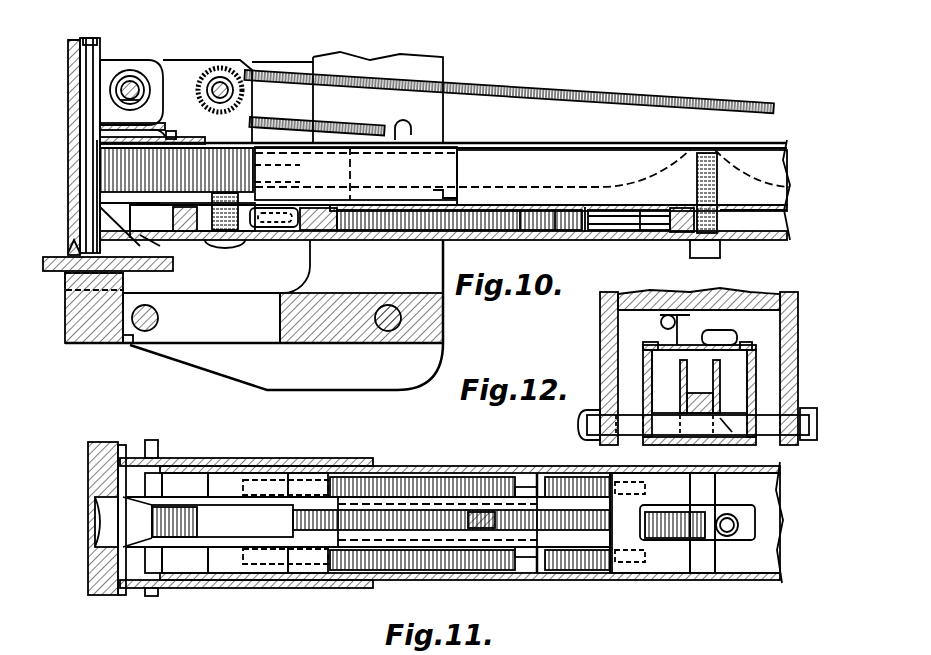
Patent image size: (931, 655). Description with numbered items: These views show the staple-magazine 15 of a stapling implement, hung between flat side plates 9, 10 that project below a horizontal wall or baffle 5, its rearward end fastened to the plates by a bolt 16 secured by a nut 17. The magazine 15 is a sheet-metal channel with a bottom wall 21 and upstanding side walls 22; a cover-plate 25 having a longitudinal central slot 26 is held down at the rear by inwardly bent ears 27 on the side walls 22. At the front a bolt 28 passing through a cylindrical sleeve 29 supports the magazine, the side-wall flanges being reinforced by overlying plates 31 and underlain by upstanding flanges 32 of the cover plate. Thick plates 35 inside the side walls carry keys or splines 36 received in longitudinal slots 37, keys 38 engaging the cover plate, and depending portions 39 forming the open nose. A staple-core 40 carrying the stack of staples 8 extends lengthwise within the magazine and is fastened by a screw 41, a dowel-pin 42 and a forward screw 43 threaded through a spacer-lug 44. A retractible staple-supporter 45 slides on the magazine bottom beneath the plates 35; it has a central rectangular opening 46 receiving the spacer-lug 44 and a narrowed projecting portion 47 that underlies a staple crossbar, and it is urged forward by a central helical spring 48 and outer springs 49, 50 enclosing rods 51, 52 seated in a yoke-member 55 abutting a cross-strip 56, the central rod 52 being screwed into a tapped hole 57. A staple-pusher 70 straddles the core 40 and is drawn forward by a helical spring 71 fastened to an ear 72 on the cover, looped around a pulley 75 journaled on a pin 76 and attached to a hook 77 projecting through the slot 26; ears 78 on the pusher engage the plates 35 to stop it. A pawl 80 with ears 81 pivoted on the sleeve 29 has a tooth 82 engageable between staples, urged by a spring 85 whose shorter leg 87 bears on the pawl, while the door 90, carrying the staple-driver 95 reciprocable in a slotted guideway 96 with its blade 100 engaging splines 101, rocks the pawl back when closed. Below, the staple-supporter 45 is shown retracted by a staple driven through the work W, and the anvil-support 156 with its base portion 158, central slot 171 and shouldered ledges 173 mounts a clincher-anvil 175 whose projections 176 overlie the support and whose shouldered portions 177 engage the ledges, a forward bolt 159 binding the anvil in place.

In FIG. 12, the horizontal wall 5 is at (752, 292).
In FIG. 10, the casing 8 is at (100, 178).
In FIG. 12, the side plate 9 is at (600, 301).
In FIG. 12, the side plate 10 is at (800, 345).
In FIG. 10, the staple-magazine 15 is at (649, 250).
In FIG. 12, the staple-magazine 15 is at (639, 360).
In FIG. 11, the staple-magazine 15 is at (495, 459).
In FIG. 12, the bolt 16 is at (634, 438).
In FIG. 12, the nut 17 is at (812, 440).
In FIG. 10, the bottom wall 21 is at (555, 238).
In FIG. 12, the bottom wall 21 is at (688, 446).
In FIG. 11, the bottom wall 21 is at (765, 492).
In FIG. 10, the side walls 22 is at (782, 218).
In FIG. 12, the side walls 22 is at (645, 362).
In FIG. 11, the side walls 22 is at (525, 486).
In FIG. 10, the cover-plate 25 is at (536, 148).
In FIG. 12, the cover-plate 25 is at (665, 354).
In FIG. 10, the central slot 26 is at (162, 132).
In FIG. 12, the central slot 26 is at (710, 331).
In FIG. 12, the ears 27 is at (652, 340).
In FIG. 10, the bolt 28 is at (128, 70).
In FIG. 10, the cylindrical sleeve 29 is at (142, 68).
In FIG. 10, the overlying plates 31 is at (268, 138).
In FIG. 11, the overlying plates 31 is at (318, 462).
In FIG. 10, the upstanding flanges 32 is at (214, 66).
In FIG. 10, the plates 35 is at (262, 172).
In FIG. 11, the plates 35 is at (248, 478).
In FIG. 11, the keys or splines 36 is at (272, 470).
In FIG. 10, the longitudinal slots 37 is at (262, 182).
In FIG. 11, the longitudinal slots 37 is at (295, 474).
In FIG. 10, the keys 38 is at (195, 140).
In FIG. 11, the keys 38 is at (188, 478).
In FIG. 10, the depending portions 39 is at (74, 236).
In FIG. 11, the depending portions 39 is at (152, 450).
In FIG. 10, the staple-core 40 is at (575, 162).
In FIG. 12, the staple-core 40 is at (716, 400).
In FIG. 11, the staple-core 40 is at (110, 545).
In FIG. 10, the screw 41 is at (718, 250).
In FIG. 11, the screw 41 is at (730, 532).
In FIG. 12, the dowel-pin 42 is at (728, 434).
In FIG. 10, the screw 43 is at (225, 247).
In FIG. 10, the spacer-lug 44 is at (245, 230).
In FIG. 10, the staple-supporter 45 is at (160, 230).
In FIG. 11, the staple-supporter 45 is at (158, 480).
In FIG. 10, the central rectangular opening 46 is at (288, 230).
In FIG. 11, the central rectangular opening 46 is at (200, 526).
In FIG. 10, the projecting portion 47 is at (112, 270).
In FIG. 11, the projecting portion 47 is at (105, 532).
In FIG. 10, the central helical spring 48 is at (490, 222).
In FIG. 11, the central helical spring 48 is at (585, 565).
In FIG. 11, the outer spring 49 is at (582, 478).
In FIG. 11, the outer spring 50 is at (610, 545).
In FIG. 11, the outer rods 51 is at (428, 477).
In FIG. 10, the central rod 52 is at (520, 228).
In FIG. 11, the central rod 52 is at (640, 555).
In FIG. 10, the yoke-member 55 is at (600, 234).
In FIG. 11, the yoke-member 55 is at (650, 570).
In FIG. 10, the cross-strip 56 is at (680, 234).
In FIG. 11, the cross-strip 56 is at (703, 574).
In FIG. 10, the tapped hole 57 is at (315, 232).
In FIG. 11, the tapped hole 57 is at (294, 520).
In FIG. 10, the staple-pusher 70 is at (457, 174).
In FIG. 11, the staple-pusher 70 is at (395, 550).
In FIG. 10, the helical spring 71 is at (500, 96).
In FIG. 12, the helical spring 71 is at (672, 328).
In FIG. 12, the ear 72 is at (684, 326).
In FIG. 10, the pulley 75 is at (236, 88).
In FIG. 10, the pin 76 is at (232, 100).
In FIG. 10, the hook 77 is at (405, 128).
In FIG. 11, the hook 77 is at (480, 530).
In FIG. 10, the ears 78 is at (455, 196).
In FIG. 11, the ears 78 is at (540, 490).
In FIG. 10, the pawl 80 is at (100, 127).
In FIG. 10, the spaced ears 81 is at (145, 80).
In FIG. 10, the tooth 82 is at (172, 132).
In FIG. 10, the spring 85 is at (140, 92).
In FIG. 10, the shorter leg 87 is at (142, 101).
In FIG. 10, the door 90 is at (82, 160).
In FIG. 11, the door 90 is at (96, 452).
In FIG. 10, the staple-driver 95 is at (111, 58).
In FIG. 10, the slotted guideway 96 is at (78, 84).
In FIG. 11, the slotted guideway 96 is at (98, 505).
In FIG. 10, the blade 100 is at (78, 104).
In FIG. 10, the splines 101 is at (90, 44).
In FIG. 11, the splines 101 is at (116, 484).
In FIG. 10, the anvil-support 156 is at (330, 344).
In FIG. 10, the base 158 is at (438, 356).
In FIG. 10, the forward bolt 159 is at (158, 320).
In FIG. 10, the central slot 171 is at (272, 344).
In FIG. 10, the shouldered ledges 173 is at (128, 346).
In FIG. 10, the clincher-anvil 175 is at (83, 324).
In FIG. 10, the projections 176 is at (85, 290).
In FIG. 10, the shouldered portions 177 is at (102, 344).
In FIG. 10, the workpiece W is at (119, 270).